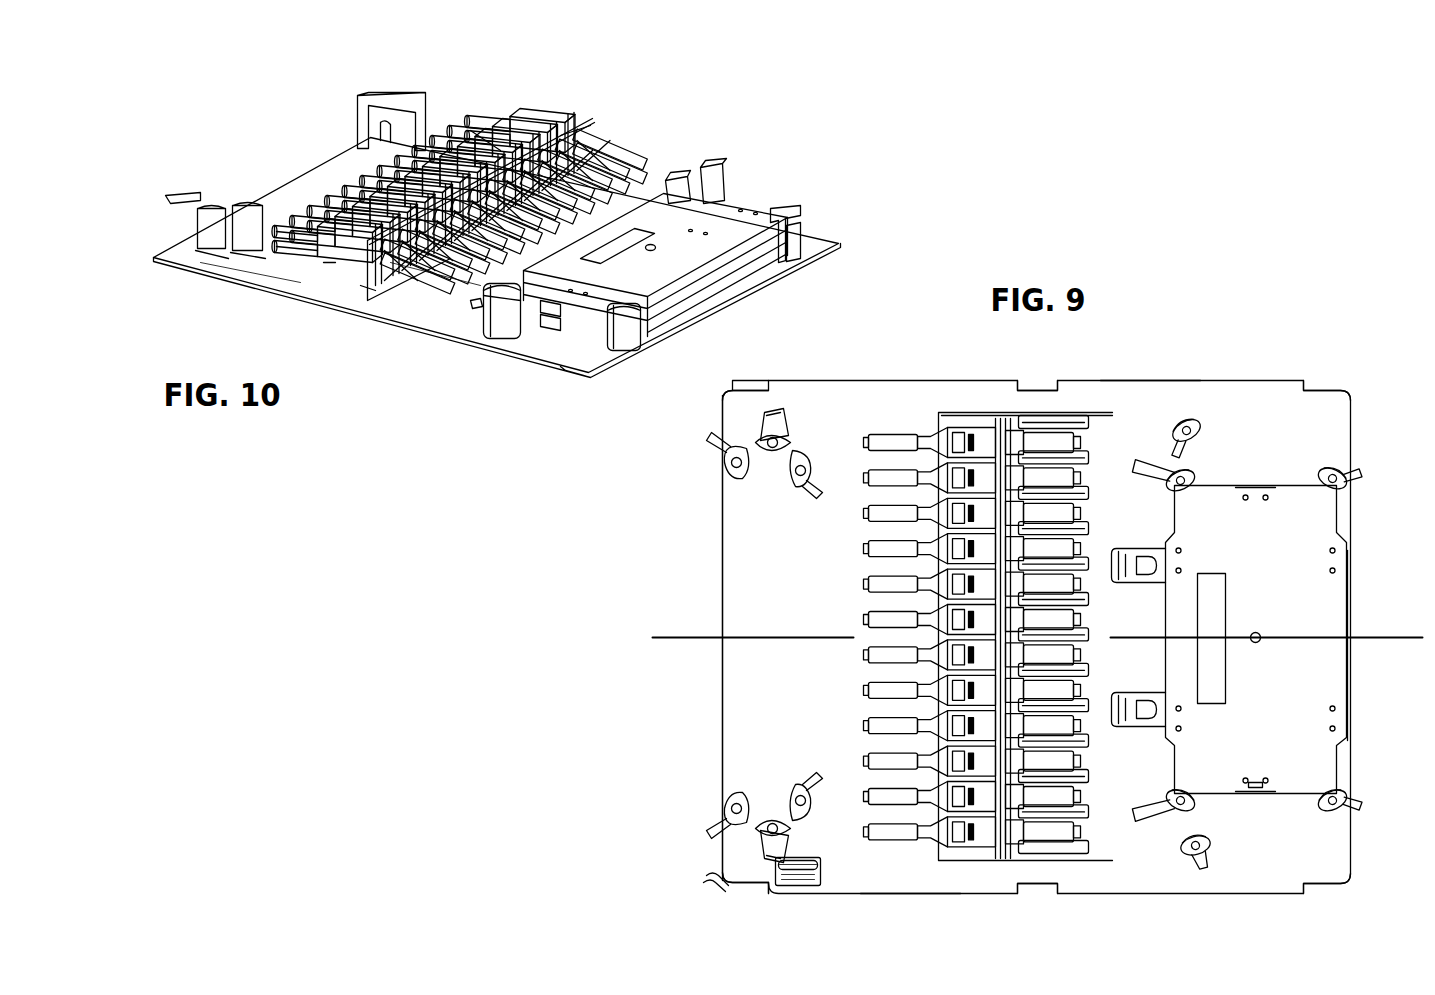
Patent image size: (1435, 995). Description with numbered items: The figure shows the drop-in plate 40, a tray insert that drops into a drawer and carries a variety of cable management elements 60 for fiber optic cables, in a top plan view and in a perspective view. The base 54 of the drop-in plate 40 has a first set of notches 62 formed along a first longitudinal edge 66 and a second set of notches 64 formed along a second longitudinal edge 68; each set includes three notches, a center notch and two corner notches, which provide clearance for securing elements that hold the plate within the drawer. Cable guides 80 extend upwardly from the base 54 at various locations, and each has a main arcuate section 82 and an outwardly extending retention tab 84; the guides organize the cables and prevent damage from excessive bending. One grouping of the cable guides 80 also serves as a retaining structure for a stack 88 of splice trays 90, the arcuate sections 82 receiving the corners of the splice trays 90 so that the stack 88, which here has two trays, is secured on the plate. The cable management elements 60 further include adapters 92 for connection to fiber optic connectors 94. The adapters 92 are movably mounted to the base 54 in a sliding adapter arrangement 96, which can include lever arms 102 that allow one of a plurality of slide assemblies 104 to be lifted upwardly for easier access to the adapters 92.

In FIG. 9, the drop-in plate 40 is at (684, 527).
In FIG. 10, the drop-in plate 40 is at (355, 405).
In FIG. 9, the base 54 is at (748, 677).
In FIG. 10, the base 54 is at (335, 168).
In FIG. 10, the cable management elements 60 is at (269, 303).
In FIG. 9, the first set of notches 62 is at (742, 887).
In FIG. 9, the second set of notches 64 is at (758, 390).
In FIG. 9, the first longitudinal edge 66 is at (912, 893).
In FIG. 9, the second longitudinal edge 68 is at (1150, 380).
In FIG. 9, the cable guides 80 is at (1333, 470).
In FIG. 10, the cable guides 80 is at (410, 112).
In FIG. 10, the main arcuate section 82 is at (175, 196).
In FIG. 10, the retention tab 84 is at (240, 240).
In FIG. 9, the stack of splice trays 88 is at (1285, 522).
In FIG. 10, the stack of splice trays 88 is at (773, 211).
In FIG. 10, the splice trays 90 is at (725, 292).
In FIG. 10, the adapters 92 is at (585, 137).
In FIG. 10, the fiber optic connectors 94 is at (300, 226).
In FIG. 9, the sliding adapter arrangement 96 is at (985, 397).
In FIG. 10, the sliding adapter arrangement 96 is at (612, 129).
In FIG. 10, the lever arms 102 is at (504, 128).
In FIG. 10, the slide assemblies 104 is at (367, 292).